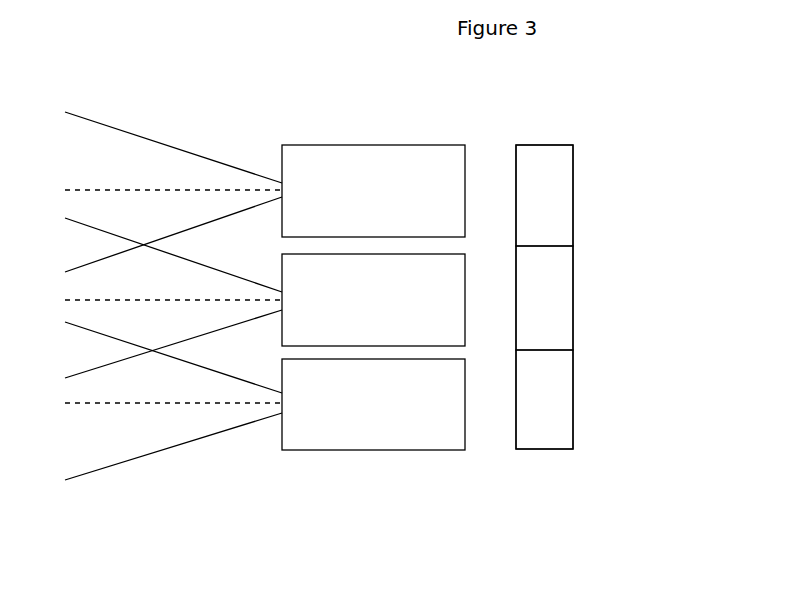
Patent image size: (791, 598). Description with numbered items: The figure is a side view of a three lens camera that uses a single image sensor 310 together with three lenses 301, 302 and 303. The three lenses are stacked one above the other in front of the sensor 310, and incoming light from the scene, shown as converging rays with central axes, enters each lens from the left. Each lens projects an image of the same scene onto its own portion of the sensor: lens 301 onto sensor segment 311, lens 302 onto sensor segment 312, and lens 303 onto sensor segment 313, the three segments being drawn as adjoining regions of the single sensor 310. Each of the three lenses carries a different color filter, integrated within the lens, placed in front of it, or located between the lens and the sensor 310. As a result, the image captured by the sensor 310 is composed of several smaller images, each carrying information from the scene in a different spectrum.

The lens 301 is at (357, 145).
The lens 302 is at (462, 325).
The lens 303 is at (338, 450).
The sensor 310 is at (596, 366).
The sensor segment 311 is at (573, 213).
The sensor segment 312 is at (573, 310).
The sensor segment 313 is at (573, 400).